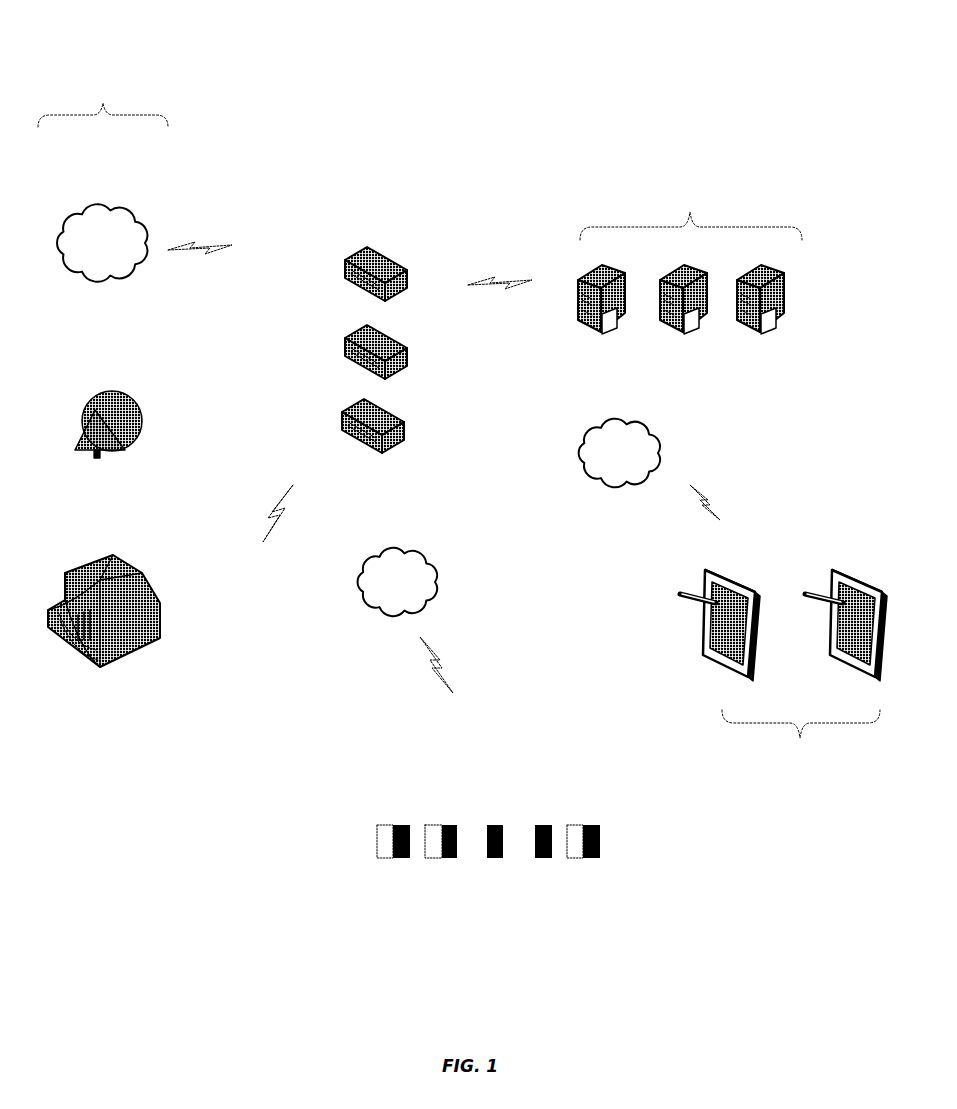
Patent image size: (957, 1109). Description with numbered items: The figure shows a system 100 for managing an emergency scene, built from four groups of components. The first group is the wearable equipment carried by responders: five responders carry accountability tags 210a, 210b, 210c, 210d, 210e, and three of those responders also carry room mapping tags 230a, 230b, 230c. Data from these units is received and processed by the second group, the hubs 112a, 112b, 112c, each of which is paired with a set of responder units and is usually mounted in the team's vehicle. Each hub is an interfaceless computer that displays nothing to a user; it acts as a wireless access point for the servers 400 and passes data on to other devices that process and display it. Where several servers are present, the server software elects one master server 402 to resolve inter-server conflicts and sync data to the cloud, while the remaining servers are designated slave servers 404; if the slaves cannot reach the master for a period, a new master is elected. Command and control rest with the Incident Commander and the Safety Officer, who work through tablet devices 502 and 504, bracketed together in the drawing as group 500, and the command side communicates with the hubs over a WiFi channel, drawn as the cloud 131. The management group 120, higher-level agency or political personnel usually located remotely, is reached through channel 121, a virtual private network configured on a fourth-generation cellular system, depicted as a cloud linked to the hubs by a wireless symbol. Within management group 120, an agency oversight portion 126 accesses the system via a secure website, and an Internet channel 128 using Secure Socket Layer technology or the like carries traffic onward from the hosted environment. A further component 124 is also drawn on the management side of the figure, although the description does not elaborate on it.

The system 100 is at (398, 66).
The management group 120 is at (103, 81).
The 4G channel 121 is at (103, 208).
The hub 112a is at (347, 260).
The hub 112b is at (373, 343).
The hub 112c is at (342, 412).
The alarm device 124 is at (142, 427).
The agency oversight portion 126 is at (160, 603).
The Internet channel 128 is at (310, 518).
The 802.11 N wireless network 131 is at (658, 453).
The servers 400 is at (691, 190).
The master server 402 is at (604, 332).
The slave servers 404 is at (682, 332).
The mobile device group 500 is at (801, 759).
The tablet device 502 is at (713, 570).
The tablet device 504 is at (853, 570).
The accountability tag 210a is at (403, 825).
The accountability tag 210b is at (450, 825).
The accountability tag 210c is at (495, 825).
The accountability tag 210d is at (543, 825).
The accountability tag 210e is at (590, 825).
The room mapping tag 230a is at (385, 858).
The room mapping tag 230b is at (437, 858).
The room mapping tag 230c is at (573, 858).